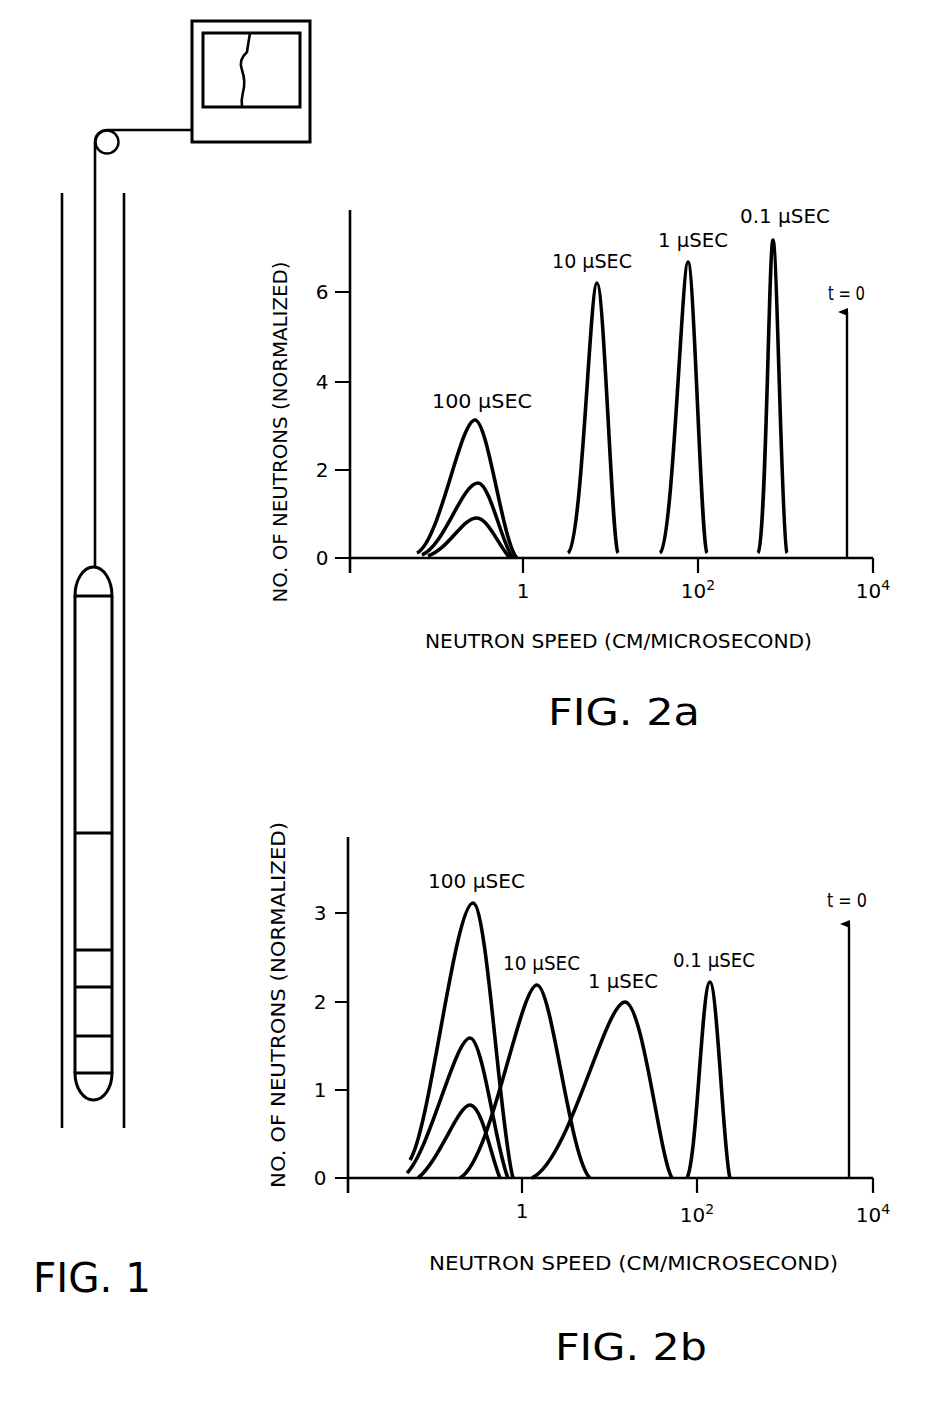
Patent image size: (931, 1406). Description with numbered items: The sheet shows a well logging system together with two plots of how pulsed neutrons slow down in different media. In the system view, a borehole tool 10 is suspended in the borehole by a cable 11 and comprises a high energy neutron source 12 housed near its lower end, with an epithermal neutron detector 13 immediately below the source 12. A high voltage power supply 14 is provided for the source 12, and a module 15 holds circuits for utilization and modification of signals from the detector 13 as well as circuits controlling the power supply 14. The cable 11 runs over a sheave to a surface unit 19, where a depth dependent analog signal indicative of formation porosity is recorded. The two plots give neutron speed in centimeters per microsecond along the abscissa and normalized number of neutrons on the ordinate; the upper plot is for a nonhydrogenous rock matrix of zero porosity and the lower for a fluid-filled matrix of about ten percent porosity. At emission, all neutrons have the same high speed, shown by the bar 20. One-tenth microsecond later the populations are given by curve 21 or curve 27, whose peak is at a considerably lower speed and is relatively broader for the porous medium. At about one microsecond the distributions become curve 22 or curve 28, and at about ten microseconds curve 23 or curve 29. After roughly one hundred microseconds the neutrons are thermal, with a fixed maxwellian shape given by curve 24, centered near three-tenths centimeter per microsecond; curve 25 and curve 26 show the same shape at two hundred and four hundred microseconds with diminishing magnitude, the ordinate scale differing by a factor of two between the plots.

In FIG. 1, the borehole tool 10 is at (87, 832).
In FIG. 1, the cable 11 is at (95, 500).
In FIG. 1, the high energy neutron source 12 is at (86, 968).
In FIG. 1, the epithermal neutron detector 13 is at (88, 1052).
In FIG. 1, the high voltage power supply 14 is at (82, 900).
In FIG. 1, the module 15 is at (87, 750).
In FIG. 1, the surface unit 19 is at (230, 135).
In FIG. 2a, the bar 20 is at (847, 437).
In FIG. 2b, the bar 20 is at (849, 1052).
In FIG. 2a, the curve 21 is at (778, 405).
In FIG. 2a, the curve 22 is at (697, 407).
In FIG. 2a, the curve 23 is at (608, 402).
In FIG. 2a, the curve 24 is at (487, 438).
In FIG. 2b, the curve 24 is at (460, 937).
In FIG. 2a, the curve 25 is at (490, 492).
In FIG. 2b, the curve 25 is at (460, 1058).
In FIG. 2a, the curve 26 is at (490, 523).
In FIG. 2b, the curve 26 is at (457, 1127).
In FIG. 2b, the curve 27 is at (722, 1053).
In FIG. 2b, the curve 28 is at (643, 1047).
In FIG. 2b, the curve 29 is at (553, 1043).